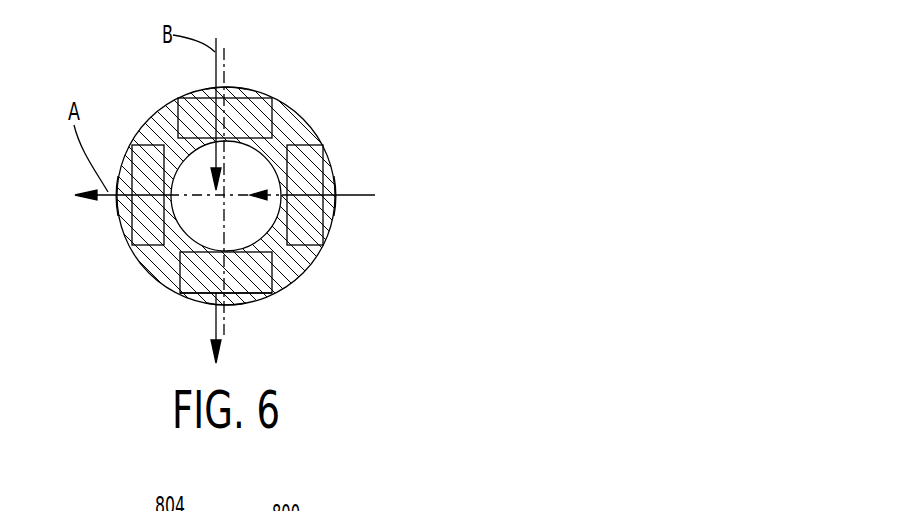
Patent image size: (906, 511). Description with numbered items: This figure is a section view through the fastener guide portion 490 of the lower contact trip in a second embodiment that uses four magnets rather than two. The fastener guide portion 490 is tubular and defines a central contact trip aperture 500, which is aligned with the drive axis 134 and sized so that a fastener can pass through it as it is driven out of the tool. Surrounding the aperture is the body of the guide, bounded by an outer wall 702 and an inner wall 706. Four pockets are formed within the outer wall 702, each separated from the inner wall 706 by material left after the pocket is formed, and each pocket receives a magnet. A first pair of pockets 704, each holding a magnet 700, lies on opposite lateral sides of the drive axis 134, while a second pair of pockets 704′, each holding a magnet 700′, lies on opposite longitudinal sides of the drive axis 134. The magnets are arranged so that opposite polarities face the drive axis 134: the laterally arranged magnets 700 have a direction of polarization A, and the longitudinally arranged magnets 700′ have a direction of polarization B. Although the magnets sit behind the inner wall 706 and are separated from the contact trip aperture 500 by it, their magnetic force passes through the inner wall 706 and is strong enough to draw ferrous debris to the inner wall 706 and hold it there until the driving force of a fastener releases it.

The drive axis 134 is at (207, 165).
The fastener guide portion 490 is at (492, 125).
The contact trip aperture 500 is at (200, 228).
The magnet 700 is at (308, 152).
The magnet 700′ is at (266, 100).
The outer wall 702 is at (158, 268).
The pocket 704 is at (323, 183).
The pocket 704′ is at (245, 90).
The inner wall 706 is at (260, 283).